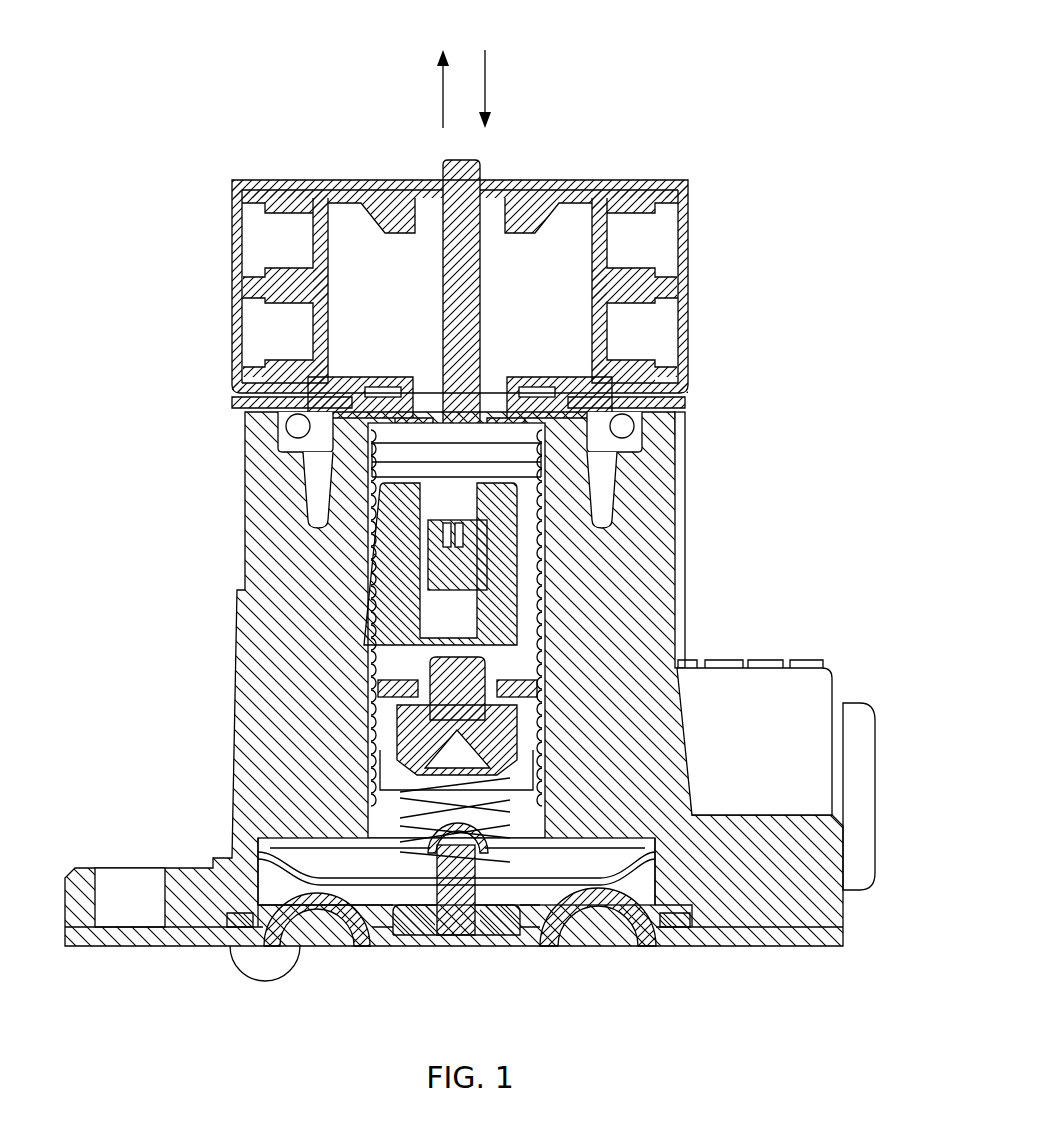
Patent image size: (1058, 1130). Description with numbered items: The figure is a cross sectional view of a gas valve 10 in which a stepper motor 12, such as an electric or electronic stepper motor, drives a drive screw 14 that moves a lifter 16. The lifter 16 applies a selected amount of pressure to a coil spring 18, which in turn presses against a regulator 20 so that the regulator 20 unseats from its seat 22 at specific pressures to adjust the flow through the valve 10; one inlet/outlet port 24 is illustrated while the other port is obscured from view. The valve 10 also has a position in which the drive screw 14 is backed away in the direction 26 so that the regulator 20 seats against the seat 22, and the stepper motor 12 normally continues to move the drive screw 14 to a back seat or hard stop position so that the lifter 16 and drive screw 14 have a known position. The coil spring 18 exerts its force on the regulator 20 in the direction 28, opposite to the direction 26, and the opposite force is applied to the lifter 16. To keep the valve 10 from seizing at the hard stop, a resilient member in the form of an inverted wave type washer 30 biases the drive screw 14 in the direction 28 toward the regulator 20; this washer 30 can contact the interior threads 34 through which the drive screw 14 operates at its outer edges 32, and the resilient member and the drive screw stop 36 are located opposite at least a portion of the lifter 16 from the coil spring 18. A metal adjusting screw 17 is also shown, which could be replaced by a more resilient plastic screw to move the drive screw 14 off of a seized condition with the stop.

The gas valve 10 is at (818, 58).
The stepper motor 12 is at (673, 290).
The drive screw 14 is at (520, 565).
The lifter 16 is at (520, 765).
The adjusting screw 17 is at (530, 743).
The coil spring 18 is at (497, 855).
The regulator 20 is at (541, 841).
The seat 22 is at (562, 848).
The inlet/outlet port 24 is at (877, 827).
The direction 26 is at (443, 88).
The direction 28 is at (485, 88).
The inverted wave type washer 30 is at (368, 677).
The edge 32 is at (533, 688).
The threads 34 is at (536, 635).
The drive screw stop 36 is at (365, 715).